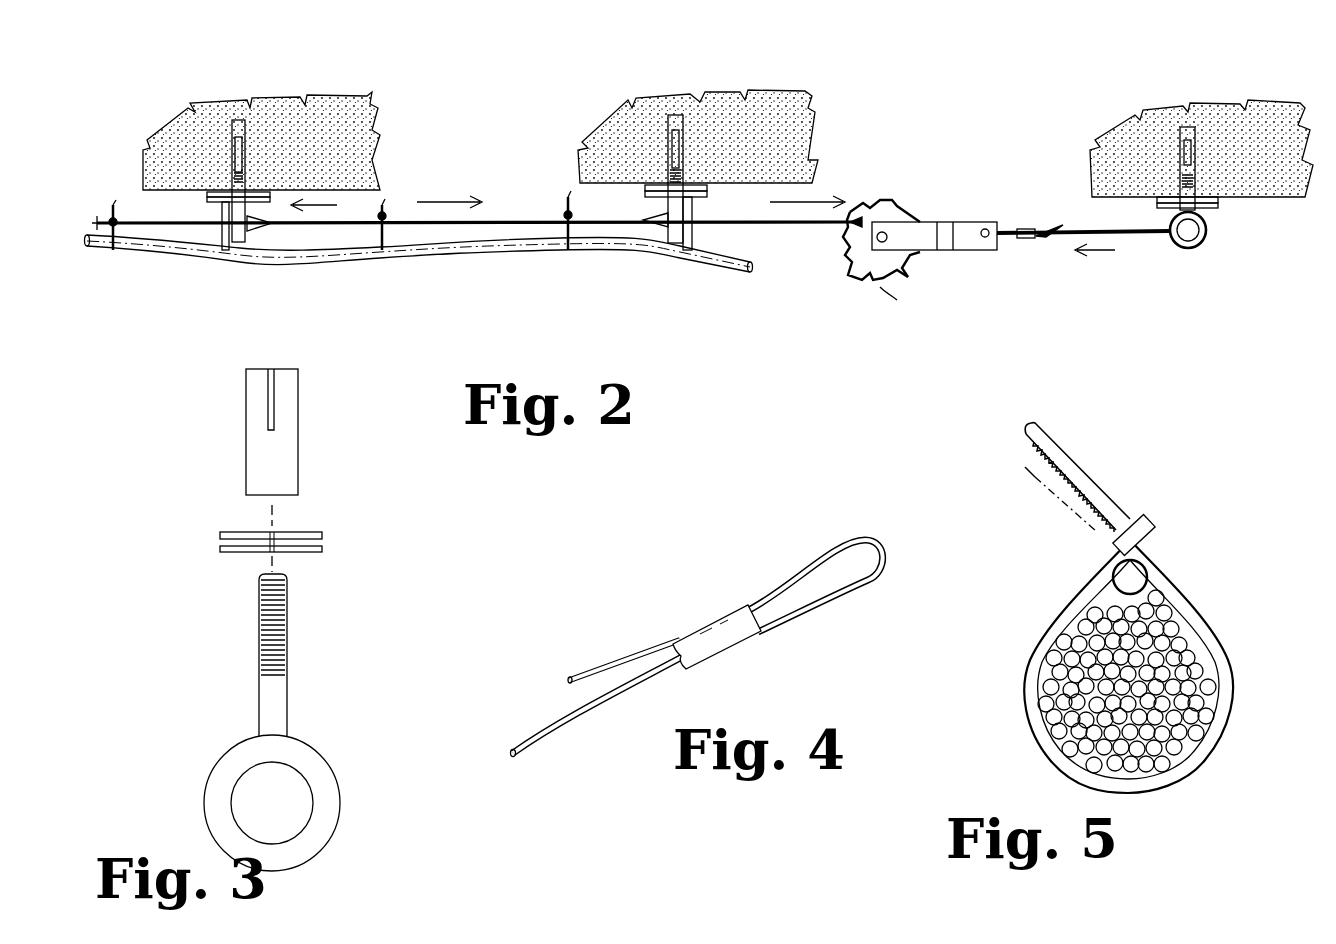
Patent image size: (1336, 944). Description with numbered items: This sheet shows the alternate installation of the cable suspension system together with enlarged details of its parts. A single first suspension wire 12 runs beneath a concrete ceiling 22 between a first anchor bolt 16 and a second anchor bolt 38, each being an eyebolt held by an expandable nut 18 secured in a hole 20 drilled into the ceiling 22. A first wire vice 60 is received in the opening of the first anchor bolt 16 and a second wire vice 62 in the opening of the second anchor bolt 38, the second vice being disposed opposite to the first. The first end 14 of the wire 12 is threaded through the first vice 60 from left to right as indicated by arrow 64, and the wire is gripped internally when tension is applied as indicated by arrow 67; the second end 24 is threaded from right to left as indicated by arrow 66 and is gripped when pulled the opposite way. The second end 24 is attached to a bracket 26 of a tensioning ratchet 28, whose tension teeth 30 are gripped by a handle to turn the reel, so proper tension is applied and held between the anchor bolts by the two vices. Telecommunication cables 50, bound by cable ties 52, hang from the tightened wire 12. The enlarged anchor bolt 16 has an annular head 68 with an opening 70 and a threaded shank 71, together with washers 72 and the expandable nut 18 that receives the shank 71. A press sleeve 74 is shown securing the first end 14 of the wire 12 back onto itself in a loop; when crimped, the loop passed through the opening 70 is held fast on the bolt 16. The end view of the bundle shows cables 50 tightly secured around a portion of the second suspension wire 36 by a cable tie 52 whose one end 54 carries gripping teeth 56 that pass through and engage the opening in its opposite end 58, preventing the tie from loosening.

In FIG. 2, the first suspension wire 12 is at (528, 220).
In FIG. 4, the first suspension wire 12 is at (555, 742).
In FIG. 4, the first end 14 is at (605, 667).
In FIG. 2, the first anchor bolt 16 is at (693, 250).
In FIG. 3, the first anchor bolt 16 is at (280, 722).
In FIG. 2, the expandable nut 18 is at (232, 150).
In FIG. 3, the expandable nut 18 is at (298, 448).
In FIG. 2, the hole 20 is at (238, 120).
In FIG. 2, the concrete ceiling 22 is at (325, 110).
In FIG. 2, the second end 24 is at (166, 252).
In FIG. 2, the bracket 26 is at (958, 222).
In FIG. 2, the tensioning ratchet 28 is at (858, 265).
In FIG. 2, the tension teeth 30 is at (897, 300).
In FIG. 2, the second suspension wire 36 is at (838, 226).
In FIG. 5, the second suspension wire 36 is at (1148, 584).
In FIG. 2, the second anchor bolt 38 is at (228, 250).
In FIG. 2, the telecommunication cables 50 is at (100, 248).
In FIG. 5, the telecommunication cables 50 is at (1060, 732).
In FIG. 2, the cable tie 52 is at (114, 250).
In FIG. 5, the cable tie 52 is at (1200, 768).
In FIG. 5, the one end 54 is at (1097, 483).
In FIG. 5, the gripping teeth 56 is at (1060, 510).
In FIG. 5, the opposite end 58 is at (1152, 522).
In FIG. 2, the first wire vice 60 is at (663, 233).
In FIG. 2, the second wire vice 62 is at (265, 232).
In FIG. 2, the arrow 64 is at (450, 200).
In FIG. 2, the arrow 66 is at (1100, 262).
In FIG. 2, the arrow 67 is at (320, 207).
In FIG. 3, the annular head 68 is at (212, 825).
In FIG. 3, the opening 70 is at (302, 778).
In FIG. 3, the threaded shank 71 is at (287, 630).
In FIG. 2, the washers 72 is at (207, 200).
In FIG. 3, the washers 72 is at (322, 540).
In FIG. 4, the press sleeve 74 is at (705, 612).